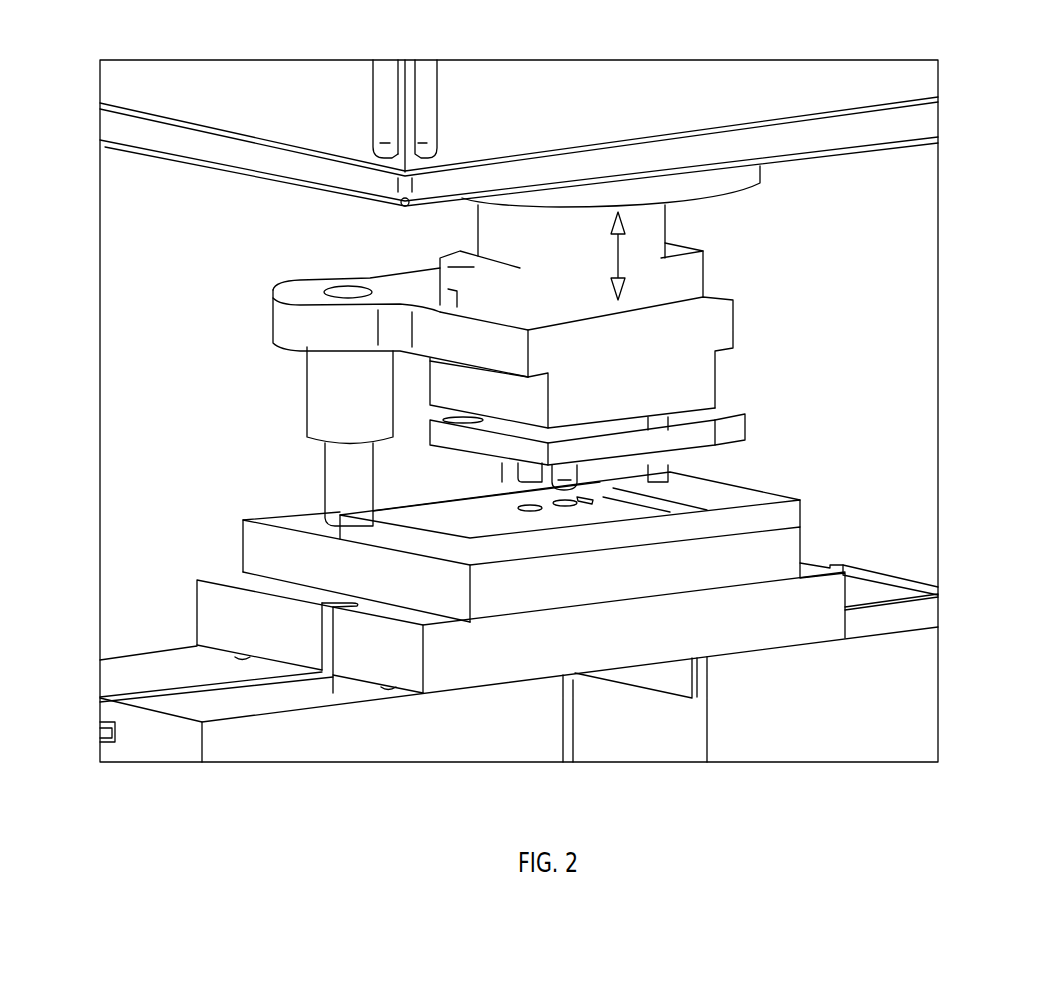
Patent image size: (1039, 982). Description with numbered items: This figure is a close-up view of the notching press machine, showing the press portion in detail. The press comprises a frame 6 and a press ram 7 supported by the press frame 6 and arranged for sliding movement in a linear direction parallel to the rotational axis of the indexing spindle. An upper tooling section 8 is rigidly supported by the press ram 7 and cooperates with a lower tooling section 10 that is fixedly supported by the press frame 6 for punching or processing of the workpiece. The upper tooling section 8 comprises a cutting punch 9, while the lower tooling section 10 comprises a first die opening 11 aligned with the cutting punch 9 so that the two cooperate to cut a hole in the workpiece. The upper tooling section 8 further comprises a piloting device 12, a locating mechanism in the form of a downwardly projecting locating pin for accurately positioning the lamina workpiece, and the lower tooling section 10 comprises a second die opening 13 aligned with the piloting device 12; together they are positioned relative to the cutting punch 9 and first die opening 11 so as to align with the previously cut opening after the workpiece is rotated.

The frame 6 is at (938, 97).
The press ram 7 is at (703, 273).
The upper tooling section 8 is at (735, 320).
The cutting punch 9 is at (518, 472).
The lower tooling section 10 is at (240, 540).
The first die opening 11 is at (560, 510).
The piloting device 12 is at (566, 493).
The second die opening 13 is at (592, 499).